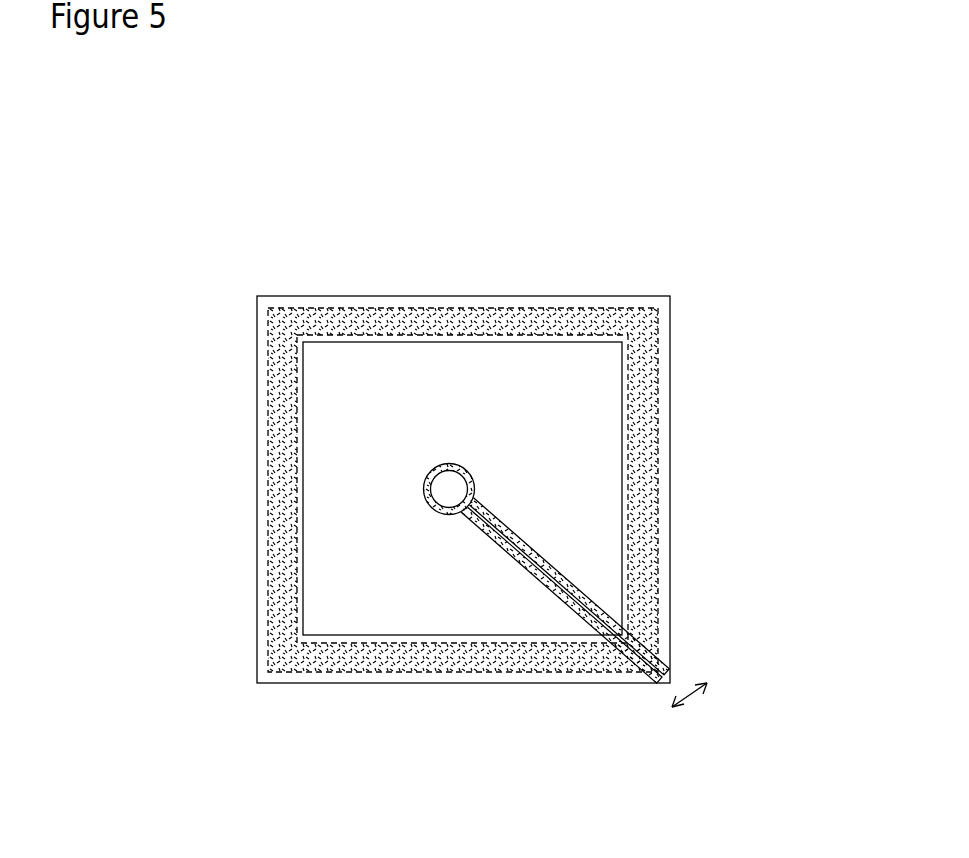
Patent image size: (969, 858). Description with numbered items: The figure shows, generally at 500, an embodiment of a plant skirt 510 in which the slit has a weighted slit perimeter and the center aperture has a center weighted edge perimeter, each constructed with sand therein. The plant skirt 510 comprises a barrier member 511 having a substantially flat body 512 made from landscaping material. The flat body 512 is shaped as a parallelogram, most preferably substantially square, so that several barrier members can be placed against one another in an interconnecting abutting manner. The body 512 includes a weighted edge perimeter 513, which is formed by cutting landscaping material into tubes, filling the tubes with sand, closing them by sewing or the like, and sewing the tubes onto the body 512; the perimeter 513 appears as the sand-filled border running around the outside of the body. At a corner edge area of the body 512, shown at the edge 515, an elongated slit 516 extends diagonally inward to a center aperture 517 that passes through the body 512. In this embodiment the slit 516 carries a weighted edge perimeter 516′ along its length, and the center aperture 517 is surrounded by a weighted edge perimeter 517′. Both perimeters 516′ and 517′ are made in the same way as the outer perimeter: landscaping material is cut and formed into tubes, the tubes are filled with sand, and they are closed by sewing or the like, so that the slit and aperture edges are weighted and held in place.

The weighted slit embodiment 500 is at (432, 145).
The plant skirt 510 is at (232, 220).
The barrier member 511 is at (255, 333).
The flat body 512 is at (343, 508).
The weighted edge perimeter 513 is at (270, 483).
The edge 515 is at (671, 670).
The elongated slit 516 is at (585, 616).
The weighted edge perimeter of slit 516′ is at (547, 558).
The center aperture 517 is at (443, 514).
The weighted edge perimeter of aperture 517′ is at (466, 470).